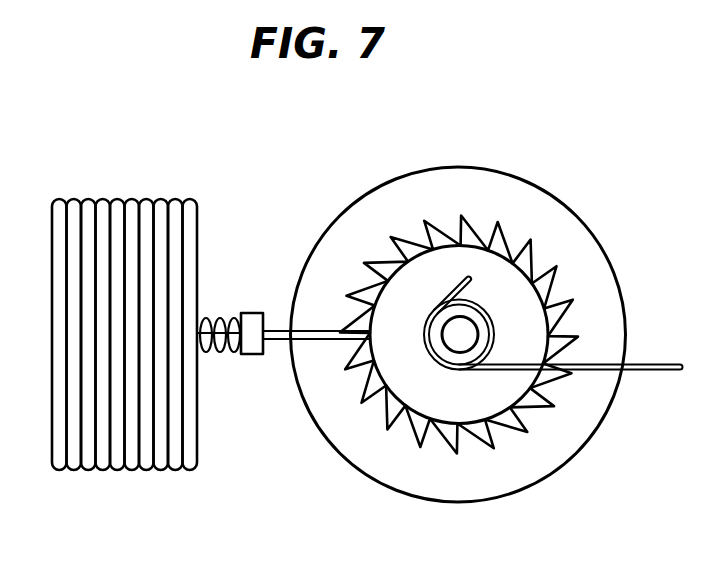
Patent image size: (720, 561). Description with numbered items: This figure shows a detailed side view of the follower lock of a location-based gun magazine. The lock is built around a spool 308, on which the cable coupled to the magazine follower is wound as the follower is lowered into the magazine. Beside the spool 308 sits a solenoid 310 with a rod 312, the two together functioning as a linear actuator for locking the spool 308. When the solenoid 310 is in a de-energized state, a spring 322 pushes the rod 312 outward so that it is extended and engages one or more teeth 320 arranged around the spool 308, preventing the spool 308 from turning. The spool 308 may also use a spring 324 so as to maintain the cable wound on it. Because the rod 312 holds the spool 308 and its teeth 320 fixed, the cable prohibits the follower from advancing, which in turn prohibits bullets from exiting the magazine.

The spool 308 is at (583, 238).
The solenoid 310 is at (128, 158).
The rod 312 is at (288, 334).
The teeth 320 is at (352, 318).
The spring 322 is at (233, 352).
The spring 324 is at (478, 368).